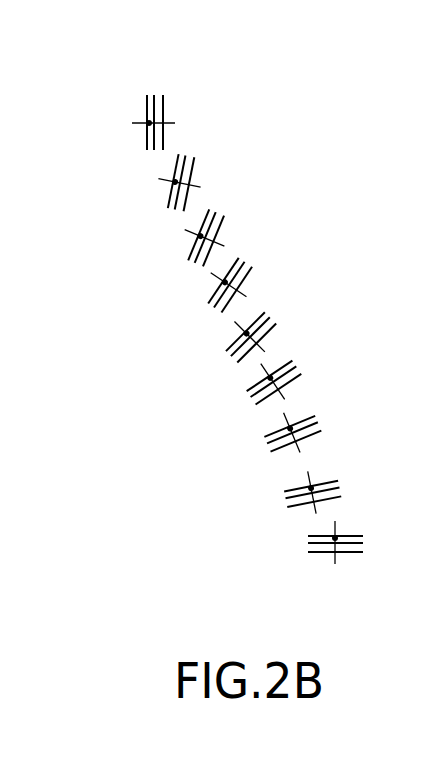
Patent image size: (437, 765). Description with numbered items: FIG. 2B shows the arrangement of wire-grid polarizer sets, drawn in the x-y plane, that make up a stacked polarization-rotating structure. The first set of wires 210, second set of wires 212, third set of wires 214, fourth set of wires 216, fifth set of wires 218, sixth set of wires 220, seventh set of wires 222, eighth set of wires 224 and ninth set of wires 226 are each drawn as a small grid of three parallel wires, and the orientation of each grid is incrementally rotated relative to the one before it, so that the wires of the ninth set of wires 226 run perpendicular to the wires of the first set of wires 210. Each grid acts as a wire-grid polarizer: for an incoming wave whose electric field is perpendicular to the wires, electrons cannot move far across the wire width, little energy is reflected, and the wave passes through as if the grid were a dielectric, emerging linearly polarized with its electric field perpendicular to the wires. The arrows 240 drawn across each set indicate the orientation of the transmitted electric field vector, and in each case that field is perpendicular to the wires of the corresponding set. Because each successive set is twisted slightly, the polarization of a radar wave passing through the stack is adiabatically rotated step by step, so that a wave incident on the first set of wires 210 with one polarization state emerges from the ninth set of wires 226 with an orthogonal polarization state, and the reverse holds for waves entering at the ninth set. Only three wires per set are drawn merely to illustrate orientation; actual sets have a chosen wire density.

The first set of wires 210 is at (363, 543).
The second set of wires 212 is at (339, 488).
The third set of wires 214 is at (318, 422).
The fourth set of wires 216 is at (296, 366).
The fifth set of wires 218 is at (270, 317).
The sixth set of wires 220 is at (245, 262).
The seventh set of wires 222 is at (216, 212).
The eighth set of wires 224 is at (185, 156).
The ninth set of wires 226 is at (154, 95).
The arrows 240 is at (132, 123).